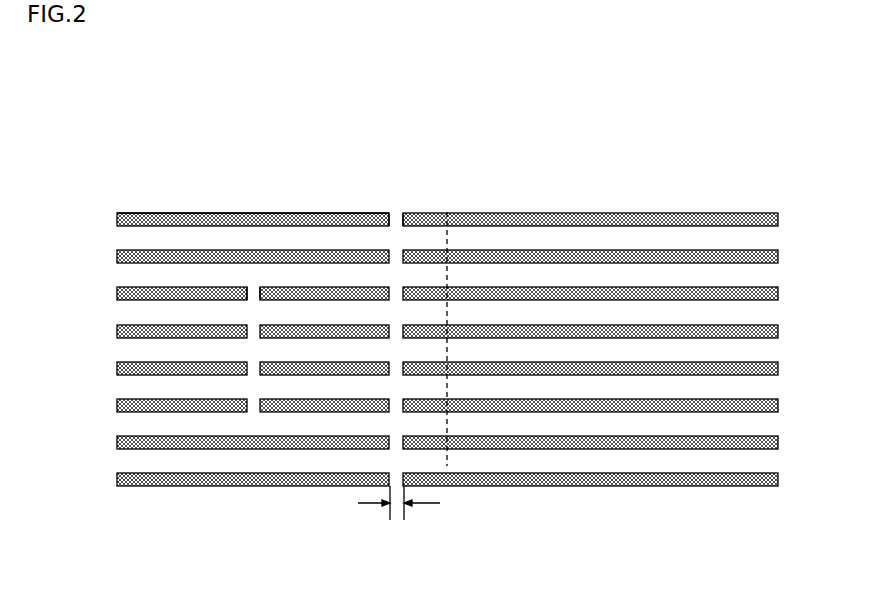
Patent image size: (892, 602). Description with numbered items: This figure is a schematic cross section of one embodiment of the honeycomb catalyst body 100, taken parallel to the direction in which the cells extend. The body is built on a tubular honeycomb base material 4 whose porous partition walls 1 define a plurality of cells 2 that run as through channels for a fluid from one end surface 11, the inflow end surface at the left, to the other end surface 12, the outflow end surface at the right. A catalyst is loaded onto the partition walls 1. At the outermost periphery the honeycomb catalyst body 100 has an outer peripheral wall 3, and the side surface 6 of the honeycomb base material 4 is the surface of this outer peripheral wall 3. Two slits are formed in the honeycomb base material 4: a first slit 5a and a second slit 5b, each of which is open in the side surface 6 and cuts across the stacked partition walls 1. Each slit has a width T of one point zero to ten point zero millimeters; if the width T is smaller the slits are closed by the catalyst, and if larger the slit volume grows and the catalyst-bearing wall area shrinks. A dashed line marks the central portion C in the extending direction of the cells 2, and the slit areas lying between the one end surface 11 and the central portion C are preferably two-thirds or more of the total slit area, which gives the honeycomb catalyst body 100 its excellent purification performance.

The honeycomb catalyst body 100 is at (835, 101).
The partition wall 1 is at (327, 447).
The cell 2 is at (173, 276).
The outer peripheral wall 3 is at (603, 212).
The honeycomb base material 4 is at (571, 490).
The slit 5a is at (254, 296).
The slit 5b is at (397, 213).
The side surface 6 is at (208, 213).
The one end surface 11 is at (117, 257).
The the other end surface 12 is at (779, 257).
The central portion C is at (447, 380).
The width T is at (399, 511).